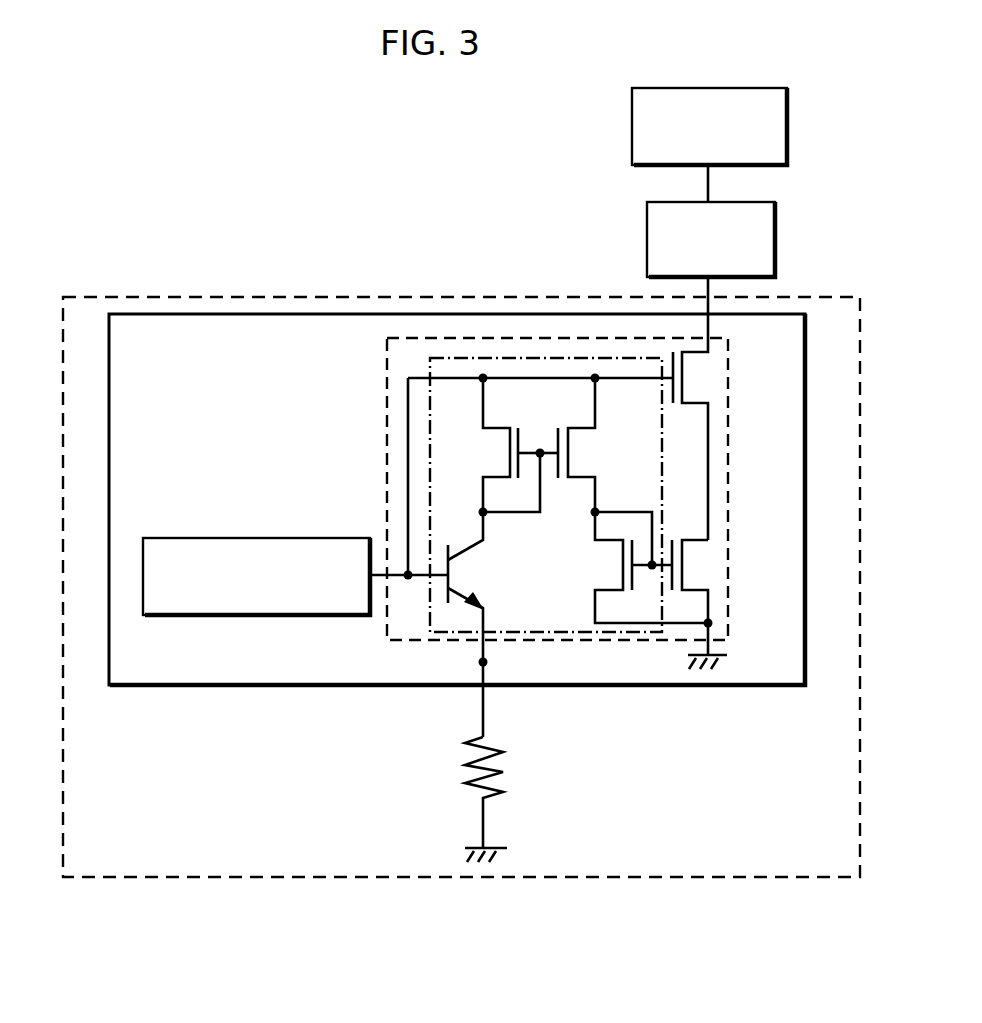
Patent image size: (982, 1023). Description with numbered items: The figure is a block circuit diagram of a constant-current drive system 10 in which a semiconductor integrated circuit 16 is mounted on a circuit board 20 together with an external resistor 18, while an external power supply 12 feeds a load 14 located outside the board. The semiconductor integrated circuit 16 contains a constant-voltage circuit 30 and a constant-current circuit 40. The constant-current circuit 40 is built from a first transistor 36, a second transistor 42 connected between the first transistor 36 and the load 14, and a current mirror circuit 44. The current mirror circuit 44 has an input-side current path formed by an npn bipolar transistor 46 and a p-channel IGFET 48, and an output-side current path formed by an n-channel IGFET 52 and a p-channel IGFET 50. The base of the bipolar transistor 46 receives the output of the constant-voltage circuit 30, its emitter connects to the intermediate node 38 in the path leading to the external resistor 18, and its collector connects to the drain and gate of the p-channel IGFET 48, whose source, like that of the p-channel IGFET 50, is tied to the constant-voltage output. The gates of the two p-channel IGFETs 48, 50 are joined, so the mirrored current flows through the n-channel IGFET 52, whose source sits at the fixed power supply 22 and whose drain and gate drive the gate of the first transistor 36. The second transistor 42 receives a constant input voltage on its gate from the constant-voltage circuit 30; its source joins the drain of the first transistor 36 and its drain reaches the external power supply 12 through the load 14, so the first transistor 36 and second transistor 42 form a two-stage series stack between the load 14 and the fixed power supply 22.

The constant-current drive system 10 is at (478, 192).
The external power supply 12 is at (790, 115).
The load 14 is at (776, 228).
The semiconductor integrated circuit 16 is at (338, 315).
The external resistor 18 is at (500, 770).
The circuit board 20 is at (503, 297).
The fixed power supply 22 is at (728, 662).
The constant-voltage circuit 30 is at (216, 617).
The first transistor 36 is at (702, 565).
The intermediate node 38 is at (480, 663).
The constant-current circuit 40 is at (387, 462).
The second transistor 42 is at (702, 375).
The current mirror circuit 44 is at (460, 358).
The npn bipolar transistor 46 is at (477, 567).
The p-channel IGFET 48 is at (500, 453).
The p-channel IGFET 50 is at (587, 453).
The n-channel IGFET 52 is at (603, 566).